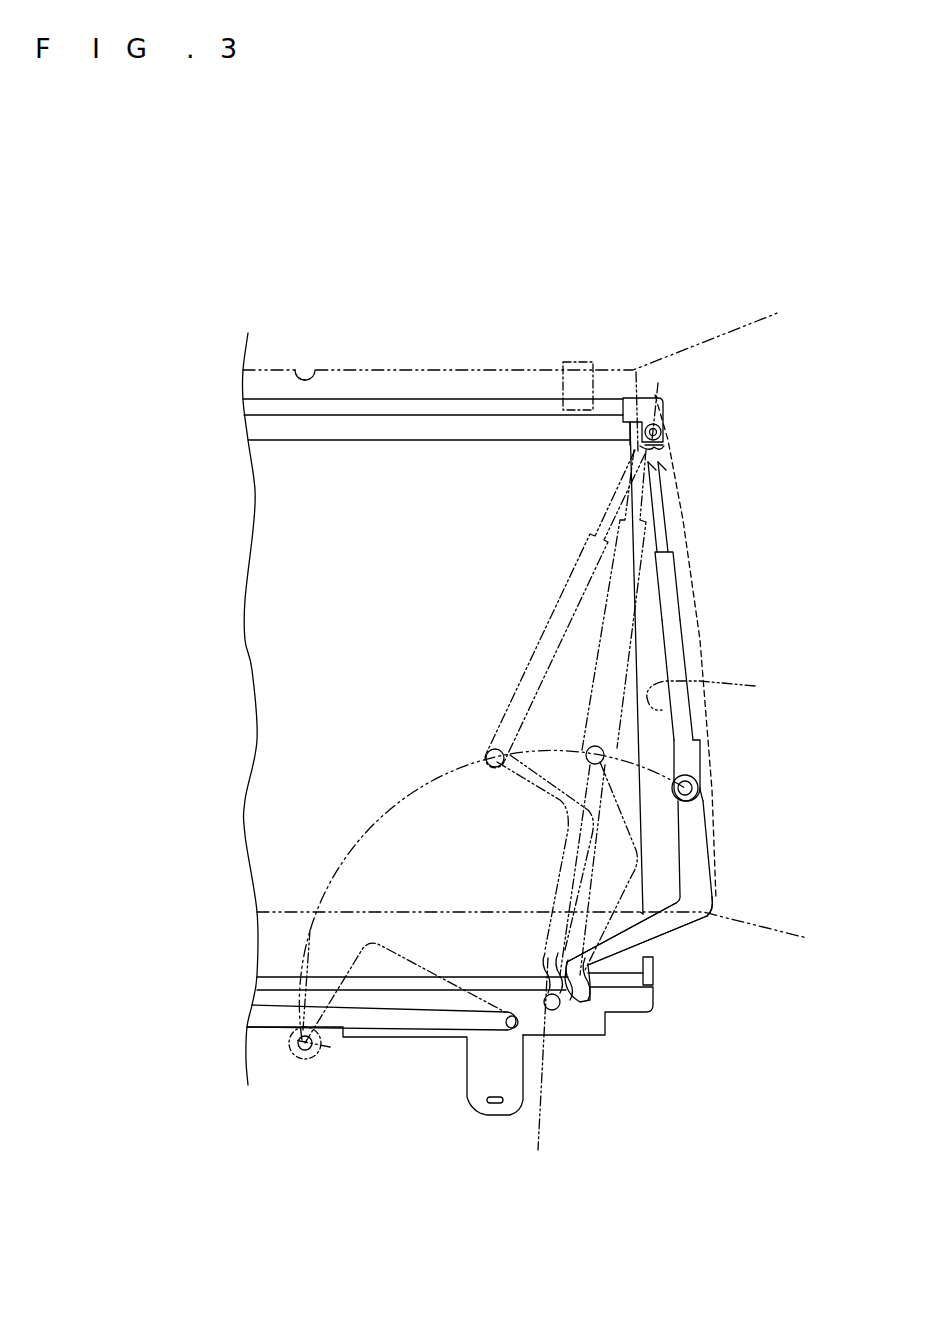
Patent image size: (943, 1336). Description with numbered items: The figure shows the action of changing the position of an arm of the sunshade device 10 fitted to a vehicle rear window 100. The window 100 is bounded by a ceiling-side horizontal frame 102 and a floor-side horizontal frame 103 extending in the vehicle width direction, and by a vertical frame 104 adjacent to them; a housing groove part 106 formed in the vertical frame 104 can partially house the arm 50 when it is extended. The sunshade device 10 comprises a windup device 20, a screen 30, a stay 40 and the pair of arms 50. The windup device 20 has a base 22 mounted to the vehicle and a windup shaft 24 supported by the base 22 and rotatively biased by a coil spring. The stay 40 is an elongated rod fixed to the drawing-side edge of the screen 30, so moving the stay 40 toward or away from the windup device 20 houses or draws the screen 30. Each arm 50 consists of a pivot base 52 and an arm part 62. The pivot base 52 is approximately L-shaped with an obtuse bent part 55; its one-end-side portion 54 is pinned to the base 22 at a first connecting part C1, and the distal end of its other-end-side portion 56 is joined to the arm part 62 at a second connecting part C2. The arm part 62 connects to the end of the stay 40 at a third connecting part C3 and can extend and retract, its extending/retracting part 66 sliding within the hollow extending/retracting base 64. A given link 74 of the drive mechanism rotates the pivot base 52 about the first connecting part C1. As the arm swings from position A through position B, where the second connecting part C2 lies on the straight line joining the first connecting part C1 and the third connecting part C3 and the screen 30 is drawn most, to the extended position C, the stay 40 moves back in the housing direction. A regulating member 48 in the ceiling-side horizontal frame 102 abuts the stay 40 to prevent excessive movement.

The sunshade device 10 is at (440, 1122).
The windup device 20 is at (632, 1027).
The base 22 is at (624, 1013).
The windup shaft 24 is at (640, 988).
The screen 30 is at (640, 630).
The stay 40 is at (386, 399).
The regulating member 48 is at (576, 362).
The arm 50 is at (716, 654).
The pivot base 52 is at (690, 928).
The one-end-side portion 54 is at (678, 940).
The bent part 55 is at (716, 903).
The other-end-side portion 56 is at (712, 840).
The arm part 62 is at (684, 566).
The extending/retracting base 64 is at (688, 652).
The extending/retracting part 66 is at (662, 478).
The given link 74 is at (265, 1030).
The window 100 is at (465, 370).
The ceiling-side horizontal frame 102 is at (309, 368).
The floor-side horizontal frame 103 is at (281, 912).
The vertical frame 104 is at (720, 688).
The housing groove part 106 is at (690, 518).
The first connecting part C1 is at (562, 1012).
The second connecting part C2 is at (694, 788).
The third connecting part C3 is at (662, 432).
The position A is at (482, 734).
The position B is at (581, 735).
The position C is at (669, 761).